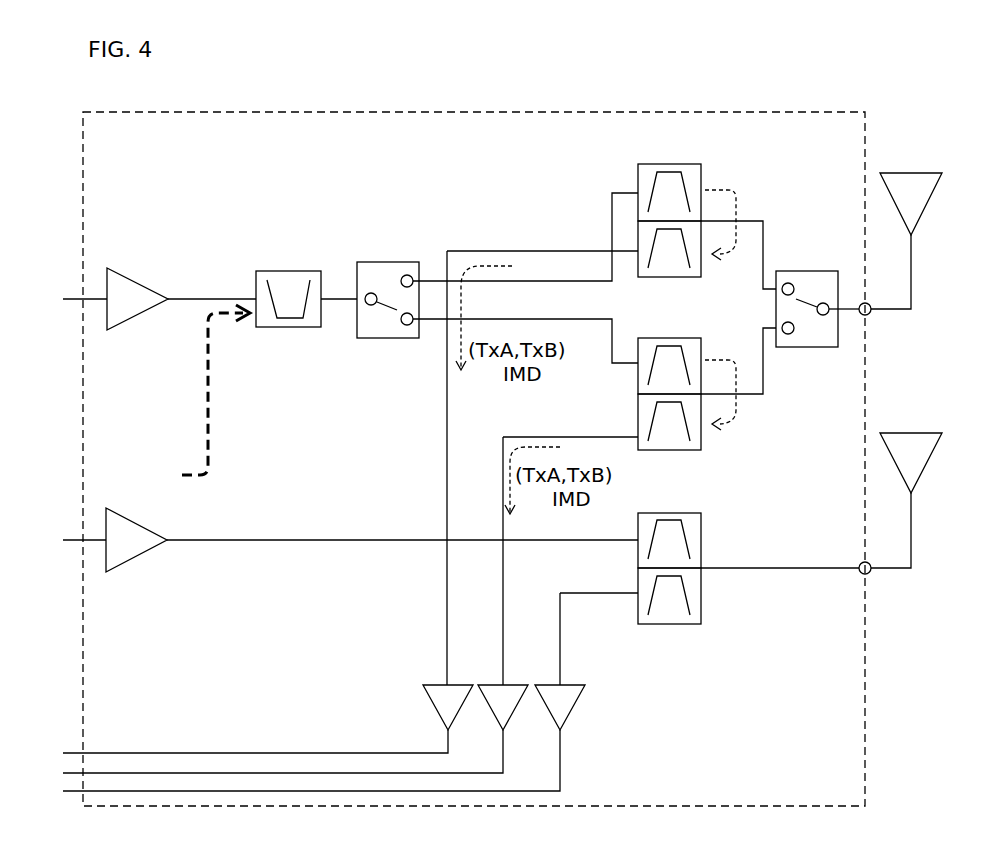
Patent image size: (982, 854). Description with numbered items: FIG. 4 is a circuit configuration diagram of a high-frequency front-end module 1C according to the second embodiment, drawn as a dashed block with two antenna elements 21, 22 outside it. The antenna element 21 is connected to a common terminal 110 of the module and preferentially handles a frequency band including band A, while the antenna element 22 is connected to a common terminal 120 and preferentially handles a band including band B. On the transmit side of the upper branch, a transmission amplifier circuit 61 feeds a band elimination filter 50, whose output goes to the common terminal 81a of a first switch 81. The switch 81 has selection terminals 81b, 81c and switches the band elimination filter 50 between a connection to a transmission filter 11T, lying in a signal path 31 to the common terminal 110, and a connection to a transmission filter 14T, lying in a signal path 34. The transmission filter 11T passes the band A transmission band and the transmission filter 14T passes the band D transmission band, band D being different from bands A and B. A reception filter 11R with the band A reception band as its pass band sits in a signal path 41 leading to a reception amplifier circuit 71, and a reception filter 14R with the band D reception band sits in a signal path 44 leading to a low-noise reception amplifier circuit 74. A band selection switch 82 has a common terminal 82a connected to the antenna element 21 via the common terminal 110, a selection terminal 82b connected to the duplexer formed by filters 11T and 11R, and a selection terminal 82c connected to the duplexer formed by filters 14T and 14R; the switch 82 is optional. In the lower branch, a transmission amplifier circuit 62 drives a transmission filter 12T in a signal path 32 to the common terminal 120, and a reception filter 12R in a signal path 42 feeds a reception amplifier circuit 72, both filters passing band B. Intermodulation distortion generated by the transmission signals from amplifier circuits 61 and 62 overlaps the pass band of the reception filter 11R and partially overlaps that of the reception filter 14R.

The high-frequency front-end module 1C is at (690, 112).
The transmission amplifier circuit 61 is at (128, 276).
The transmission amplifier circuit 62 is at (128, 520).
The band elimination filter 50 is at (270, 271).
The switch 81 is at (388, 300).
The common terminal 81a is at (366, 305).
The selection terminal 81b is at (407, 275).
The selection terminal 81c is at (406, 325).
The signal path 31 is at (530, 281).
The signal path 34 is at (530, 319).
The signal path 32 is at (346, 540).
The signal path 41 is at (446, 622).
The signal path 44 is at (503, 622).
The signal path 42 is at (560, 622).
The transmission filter 11T is at (701, 178).
The reception filter 11R is at (701, 268).
The transmission filter 14T is at (701, 350).
The reception filter 14R is at (701, 440).
The transmission filter 12T is at (701, 525).
The reception filter 12R is at (701, 598).
The switch 82 is at (814, 310).
The common terminal 82a is at (823, 316).
The selection terminal 82b is at (788, 283).
The selection terminal 82c is at (787, 335).
The common terminal 110 is at (872, 313).
The common terminal 120 is at (872, 572).
The antenna element 21 is at (895, 173).
The antenna element 22 is at (895, 433).
The reception amplifier circuit 71 is at (433, 682).
The reception amplifier circuit 74 is at (490, 682).
The reception amplifier circuit 72 is at (583, 682).